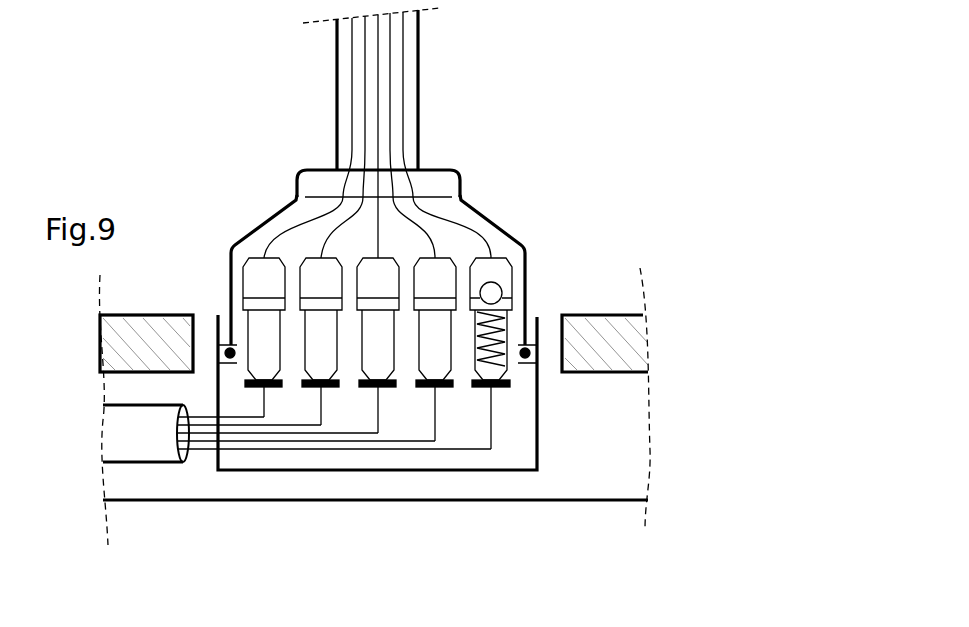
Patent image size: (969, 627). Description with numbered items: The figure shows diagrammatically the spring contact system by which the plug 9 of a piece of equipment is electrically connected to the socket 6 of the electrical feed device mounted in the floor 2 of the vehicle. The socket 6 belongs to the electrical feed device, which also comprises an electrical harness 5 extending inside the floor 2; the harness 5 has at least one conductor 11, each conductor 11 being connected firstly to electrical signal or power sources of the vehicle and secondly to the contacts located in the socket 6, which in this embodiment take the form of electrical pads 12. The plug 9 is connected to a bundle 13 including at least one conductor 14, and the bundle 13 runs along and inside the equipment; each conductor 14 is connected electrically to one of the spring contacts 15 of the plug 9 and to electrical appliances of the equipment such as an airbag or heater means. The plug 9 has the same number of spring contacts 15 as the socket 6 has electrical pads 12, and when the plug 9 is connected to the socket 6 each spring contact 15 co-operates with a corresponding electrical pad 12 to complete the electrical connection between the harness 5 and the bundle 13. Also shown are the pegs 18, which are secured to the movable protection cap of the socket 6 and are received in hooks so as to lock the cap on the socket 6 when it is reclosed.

The floor 2 is at (641, 348).
The electrical harness 5 is at (130, 445).
The socket 6 is at (458, 475).
The plug 9 is at (527, 248).
The conductor 11 is at (198, 450).
The electrical pads 12 is at (500, 390).
The bundle 13 is at (421, 58).
The conductor 14 is at (468, 225).
The spring contacts 15 is at (254, 282).
The pegs 18 is at (222, 355).